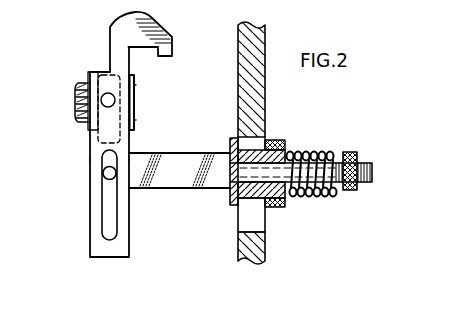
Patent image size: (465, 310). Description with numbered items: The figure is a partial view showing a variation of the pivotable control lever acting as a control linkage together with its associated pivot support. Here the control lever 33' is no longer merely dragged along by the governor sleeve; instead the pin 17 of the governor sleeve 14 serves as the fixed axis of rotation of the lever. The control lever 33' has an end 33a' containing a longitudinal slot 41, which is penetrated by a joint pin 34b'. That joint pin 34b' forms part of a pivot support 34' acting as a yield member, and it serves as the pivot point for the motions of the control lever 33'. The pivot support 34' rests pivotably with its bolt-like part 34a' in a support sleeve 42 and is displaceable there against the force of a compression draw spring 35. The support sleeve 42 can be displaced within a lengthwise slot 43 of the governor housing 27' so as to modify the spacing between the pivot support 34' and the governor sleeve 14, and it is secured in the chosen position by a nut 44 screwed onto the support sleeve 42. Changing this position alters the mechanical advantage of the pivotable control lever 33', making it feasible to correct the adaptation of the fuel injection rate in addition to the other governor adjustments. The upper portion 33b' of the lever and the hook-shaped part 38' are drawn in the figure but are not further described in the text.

The governor sleeve 14 is at (76, 103).
The pin 17 is at (101, 100).
The governor housing 27' is at (269, 141).
The control lever 33' is at (83, 103).
The end of control lever 33a' is at (137, 221).
The upper hook portion 33b' is at (119, 21).
The pivot support 34' is at (179, 144).
The bolt-like part 34a' is at (180, 150).
The joint pin 34b' is at (142, 198).
The compression draw spring 35 is at (301, 152).
The hook bracket 38' is at (102, 42).
The longitudinal slot 41 is at (114, 231).
The support sleeve 42 is at (232, 140).
The lengthwise slot 43 is at (252, 231).
The nut 44 is at (276, 140).